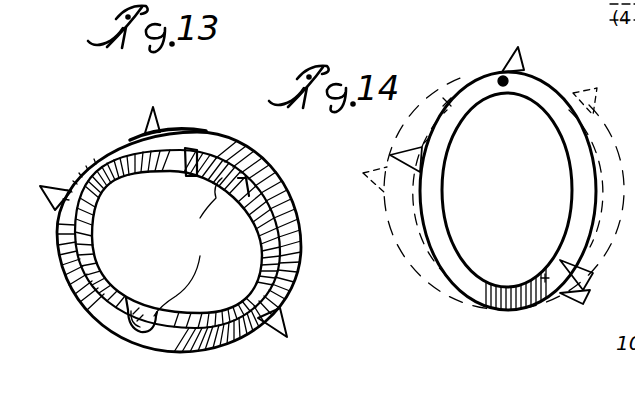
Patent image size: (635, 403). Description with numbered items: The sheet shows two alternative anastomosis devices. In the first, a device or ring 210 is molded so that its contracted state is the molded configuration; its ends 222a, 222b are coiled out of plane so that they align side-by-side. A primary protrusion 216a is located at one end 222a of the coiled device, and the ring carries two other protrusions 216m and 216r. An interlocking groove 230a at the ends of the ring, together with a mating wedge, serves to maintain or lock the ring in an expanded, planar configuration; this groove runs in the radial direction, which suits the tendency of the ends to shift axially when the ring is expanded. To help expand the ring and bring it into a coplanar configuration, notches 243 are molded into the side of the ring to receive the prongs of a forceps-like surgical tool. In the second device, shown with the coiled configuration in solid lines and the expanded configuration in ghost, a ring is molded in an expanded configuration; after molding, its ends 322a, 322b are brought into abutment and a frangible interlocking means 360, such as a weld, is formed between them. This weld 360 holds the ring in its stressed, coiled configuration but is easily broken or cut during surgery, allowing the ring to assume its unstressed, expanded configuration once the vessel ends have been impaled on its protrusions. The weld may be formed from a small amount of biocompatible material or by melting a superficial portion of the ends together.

In FIG. 13, the ring 210 is at (100, 322).
In FIG. 13, the primary protrusion 216a is at (160, 117).
In FIG. 13, the protrusion 216r is at (54, 210).
In FIG. 13, the protrusion 216m is at (287, 337).
In FIG. 13, the end 222a is at (168, 128).
In FIG. 13, the end 222b is at (160, 176).
In FIG. 13, the interlocking groove 230a is at (140, 134).
In FIG. 13, the notches 243 is at (196, 247).
In FIG. 14, the end 322a is at (522, 90).
In FIG. 14, the end 322b is at (487, 90).
In FIG. 14, the frangible interlocking means 360 is at (503, 81).